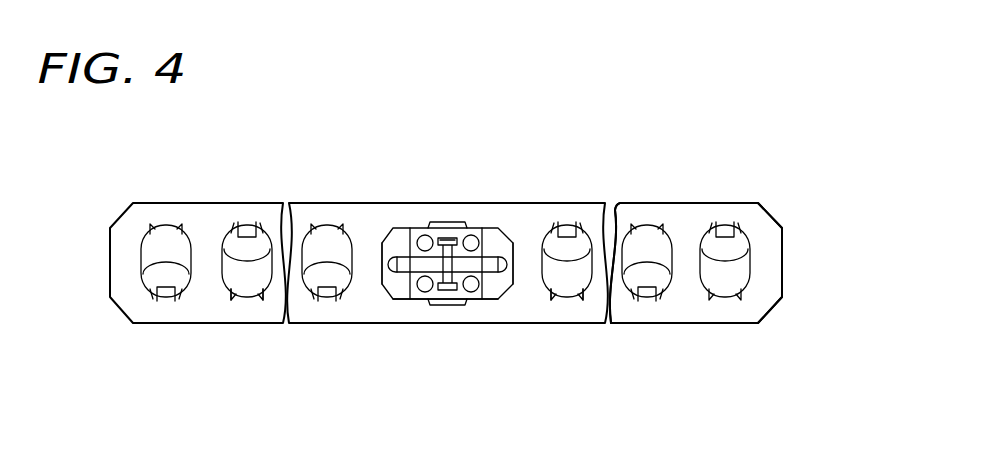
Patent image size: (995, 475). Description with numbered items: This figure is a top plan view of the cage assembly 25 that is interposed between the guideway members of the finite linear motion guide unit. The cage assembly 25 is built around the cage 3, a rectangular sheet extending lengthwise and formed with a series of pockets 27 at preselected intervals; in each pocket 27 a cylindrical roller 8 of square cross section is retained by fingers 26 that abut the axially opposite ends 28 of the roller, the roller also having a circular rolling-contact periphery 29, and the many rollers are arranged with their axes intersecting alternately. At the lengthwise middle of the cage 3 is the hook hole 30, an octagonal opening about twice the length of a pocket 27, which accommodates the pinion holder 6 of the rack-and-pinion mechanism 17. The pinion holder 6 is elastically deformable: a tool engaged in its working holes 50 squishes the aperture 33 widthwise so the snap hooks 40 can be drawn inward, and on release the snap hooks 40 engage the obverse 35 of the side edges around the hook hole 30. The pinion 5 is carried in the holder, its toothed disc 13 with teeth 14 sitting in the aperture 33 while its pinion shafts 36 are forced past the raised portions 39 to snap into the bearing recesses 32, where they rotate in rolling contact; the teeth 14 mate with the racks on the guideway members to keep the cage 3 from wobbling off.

The cage 3 is at (525, 215).
The pinion 5 is at (468, 226).
The pinion holder 6 is at (398, 285).
The cylindrical roller 8 is at (185, 270).
The disc 13 is at (498, 227).
The teeth 14 is at (384, 292).
The rack-and-pinion mechanism 17 is at (442, 223).
The cage assembly 25 is at (664, 201).
The fingers 26 is at (247, 223).
The pocket 27 is at (150, 292).
The axially opposite ends 28 is at (228, 240).
The circular rolling-contact periphery 29 is at (277, 278).
The hook hole 30 is at (420, 292).
The bearing recesses 32 is at (452, 300).
The aperture 33 is at (410, 258).
The obverse 35 is at (378, 262).
The pinion shafts 36 is at (455, 225).
The raised portions 39 is at (428, 236).
The snap hook 40 is at (448, 225).
The working holes 50 is at (427, 296).